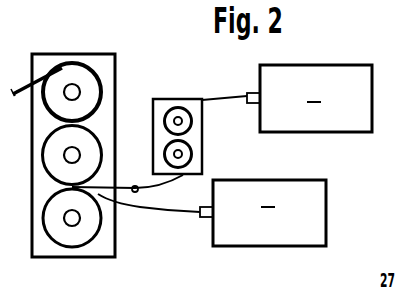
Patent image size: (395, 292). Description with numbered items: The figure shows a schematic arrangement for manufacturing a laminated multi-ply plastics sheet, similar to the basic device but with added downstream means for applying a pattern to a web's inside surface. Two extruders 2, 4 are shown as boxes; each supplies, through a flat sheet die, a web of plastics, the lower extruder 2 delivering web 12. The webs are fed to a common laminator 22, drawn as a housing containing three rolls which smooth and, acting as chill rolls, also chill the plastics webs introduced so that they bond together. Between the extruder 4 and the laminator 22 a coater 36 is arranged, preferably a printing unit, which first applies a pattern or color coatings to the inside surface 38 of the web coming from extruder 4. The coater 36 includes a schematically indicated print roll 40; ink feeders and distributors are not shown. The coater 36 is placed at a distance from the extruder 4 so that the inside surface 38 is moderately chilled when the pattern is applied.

The extruder 2 is at (263, 213).
The extruder 4 is at (309, 98).
The web 12 is at (170, 216).
The laminator 22 is at (115, 250).
The coater 36 is at (170, 100).
The inside surface 38 is at (133, 186).
The print roll 40 is at (182, 121).